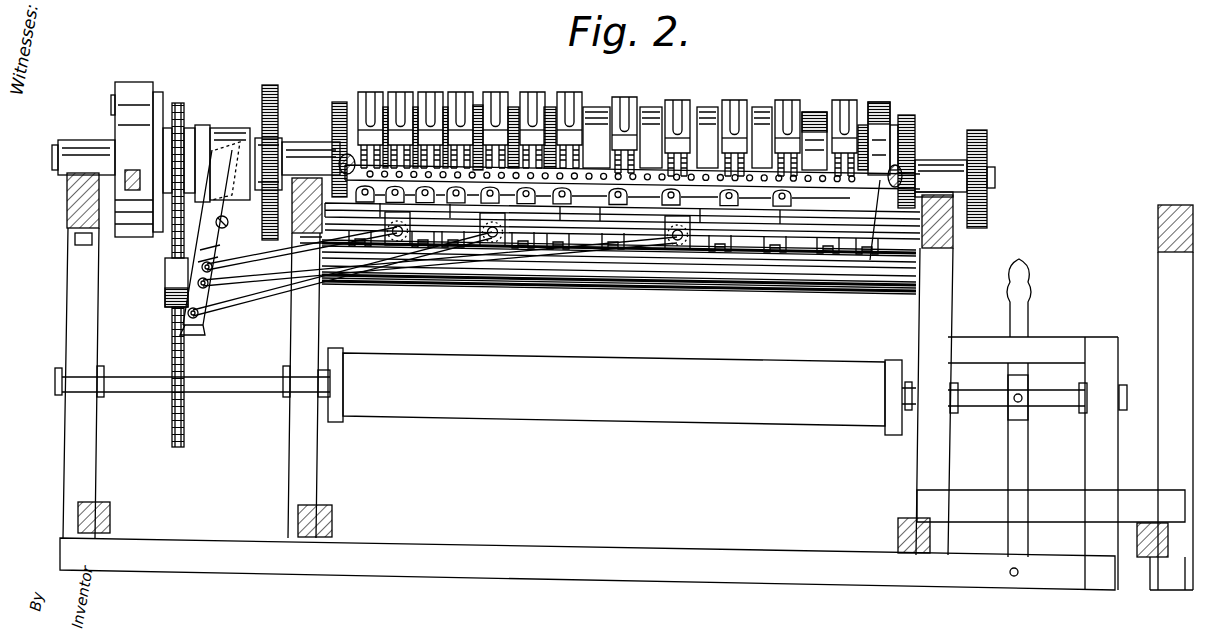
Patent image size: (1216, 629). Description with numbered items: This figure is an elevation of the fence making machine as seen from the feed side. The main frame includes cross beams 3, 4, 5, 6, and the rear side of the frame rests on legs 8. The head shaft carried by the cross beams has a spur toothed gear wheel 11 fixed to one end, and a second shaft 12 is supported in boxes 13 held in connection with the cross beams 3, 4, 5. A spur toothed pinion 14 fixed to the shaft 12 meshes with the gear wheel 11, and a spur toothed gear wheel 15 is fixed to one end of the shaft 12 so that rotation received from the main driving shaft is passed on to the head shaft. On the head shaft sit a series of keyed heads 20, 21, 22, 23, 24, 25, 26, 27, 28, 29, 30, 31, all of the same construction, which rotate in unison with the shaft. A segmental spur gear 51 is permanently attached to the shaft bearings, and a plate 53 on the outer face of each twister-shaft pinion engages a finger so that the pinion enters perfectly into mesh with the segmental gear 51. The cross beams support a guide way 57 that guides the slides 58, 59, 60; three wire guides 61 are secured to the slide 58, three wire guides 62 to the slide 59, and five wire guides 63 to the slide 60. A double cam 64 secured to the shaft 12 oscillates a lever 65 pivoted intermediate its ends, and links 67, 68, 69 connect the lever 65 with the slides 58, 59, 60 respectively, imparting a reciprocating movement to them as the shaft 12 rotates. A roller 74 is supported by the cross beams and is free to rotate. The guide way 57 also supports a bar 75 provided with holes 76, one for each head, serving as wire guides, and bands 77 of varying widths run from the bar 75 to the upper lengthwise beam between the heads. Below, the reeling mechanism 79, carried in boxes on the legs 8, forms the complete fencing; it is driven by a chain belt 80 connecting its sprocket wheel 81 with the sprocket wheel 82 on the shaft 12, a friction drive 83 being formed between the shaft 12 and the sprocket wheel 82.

The cross beam 3 is at (75, 200).
The cross beam 4 is at (307, 205).
The cross beam 5 is at (953, 238).
The cross beam 6 is at (1167, 228).
The legs 8 is at (628, 409).
The spur toothed gear wheel 11 is at (279, 100).
The shaft 12 is at (522, 166).
The boxes 13 is at (512, 156).
The spur toothed pinion 14 is at (282, 140).
The spur toothed gear wheel 15 is at (988, 140).
The head 20 is at (367, 93).
The head 21 is at (399, 93).
The head 22 is at (429, 93).
The head 23 is at (459, 93).
The head 24 is at (493, 93).
The head 25 is at (530, 93).
The head 26 is at (567, 93).
The head 27 is at (622, 98).
The head 28 is at (675, 101).
The head 29 is at (733, 101).
The head 30 is at (788, 101).
The head 31 is at (841, 101).
The segmental spur gear 51 is at (333, 125).
The plate 53 is at (337, 103).
The guide way 57 is at (762, 234).
The slide 58 is at (424, 246).
The slide 59 is at (522, 216).
The slide 60 is at (618, 208).
The wire guides 61 is at (365, 203).
The wire guides 62 is at (470, 247).
The wire guides 63 is at (710, 250).
The double cam 64 is at (230, 128).
The lever 65 is at (204, 330).
The link 67 is at (262, 238).
The link 68 is at (272, 283).
The link 69 is at (280, 295).
The roller 74 is at (608, 273).
The bar 75 is at (872, 262).
The holes 76 is at (882, 128).
The bands 77 is at (386, 106).
The reeling mechanism 79 is at (615, 391).
The chain belt 80 is at (172, 305).
The sprocket wheel 81 is at (186, 377).
The sprocket wheel 82 is at (187, 127).
The friction drive 83 is at (137, 151).